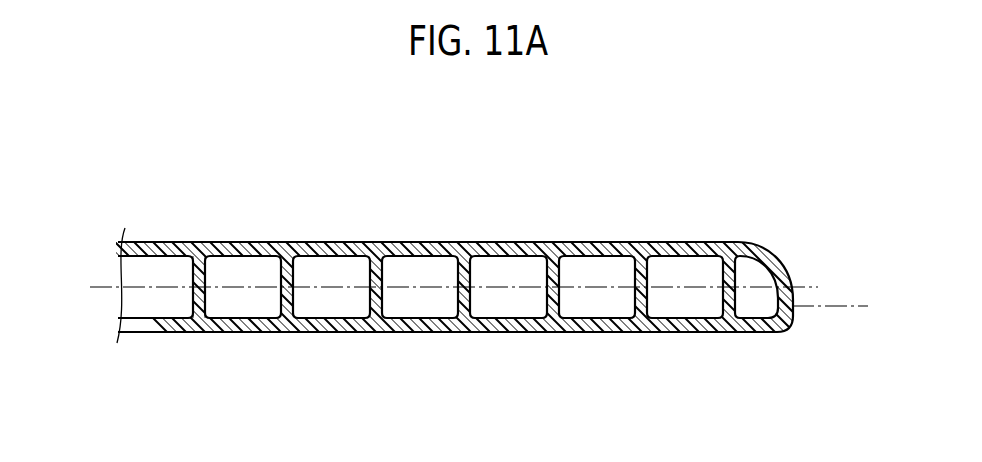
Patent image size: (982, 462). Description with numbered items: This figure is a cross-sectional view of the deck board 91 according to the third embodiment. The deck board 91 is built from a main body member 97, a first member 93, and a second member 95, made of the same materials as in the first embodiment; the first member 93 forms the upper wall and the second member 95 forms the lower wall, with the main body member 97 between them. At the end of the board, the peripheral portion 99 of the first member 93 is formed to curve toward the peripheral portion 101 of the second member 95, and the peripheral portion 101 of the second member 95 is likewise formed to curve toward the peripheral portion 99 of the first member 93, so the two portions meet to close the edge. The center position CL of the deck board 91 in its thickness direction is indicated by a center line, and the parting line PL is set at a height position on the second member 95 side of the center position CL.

The deck board 91 is at (453, 207).
The first member 93 is at (188, 247).
The second member 95 is at (187, 327).
The main body member 97 is at (197, 300).
The peripheral portion of the first member 99 is at (770, 262).
The peripheral portion of the second member 101 is at (793, 327).
The center position CL is at (692, 287).
The parting line PL is at (830, 291).